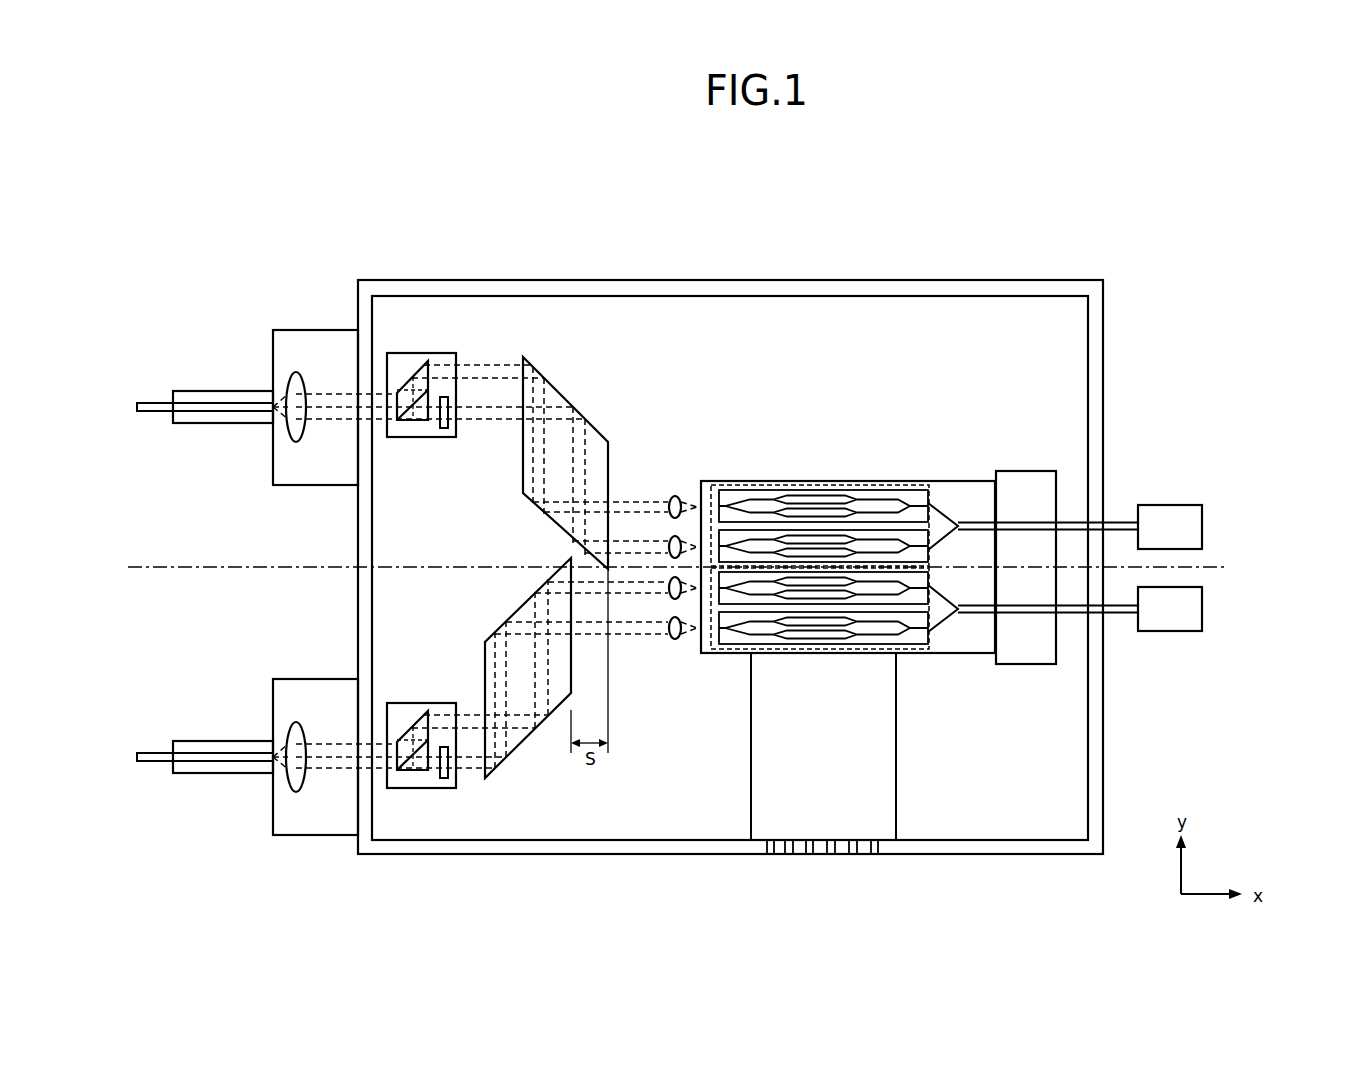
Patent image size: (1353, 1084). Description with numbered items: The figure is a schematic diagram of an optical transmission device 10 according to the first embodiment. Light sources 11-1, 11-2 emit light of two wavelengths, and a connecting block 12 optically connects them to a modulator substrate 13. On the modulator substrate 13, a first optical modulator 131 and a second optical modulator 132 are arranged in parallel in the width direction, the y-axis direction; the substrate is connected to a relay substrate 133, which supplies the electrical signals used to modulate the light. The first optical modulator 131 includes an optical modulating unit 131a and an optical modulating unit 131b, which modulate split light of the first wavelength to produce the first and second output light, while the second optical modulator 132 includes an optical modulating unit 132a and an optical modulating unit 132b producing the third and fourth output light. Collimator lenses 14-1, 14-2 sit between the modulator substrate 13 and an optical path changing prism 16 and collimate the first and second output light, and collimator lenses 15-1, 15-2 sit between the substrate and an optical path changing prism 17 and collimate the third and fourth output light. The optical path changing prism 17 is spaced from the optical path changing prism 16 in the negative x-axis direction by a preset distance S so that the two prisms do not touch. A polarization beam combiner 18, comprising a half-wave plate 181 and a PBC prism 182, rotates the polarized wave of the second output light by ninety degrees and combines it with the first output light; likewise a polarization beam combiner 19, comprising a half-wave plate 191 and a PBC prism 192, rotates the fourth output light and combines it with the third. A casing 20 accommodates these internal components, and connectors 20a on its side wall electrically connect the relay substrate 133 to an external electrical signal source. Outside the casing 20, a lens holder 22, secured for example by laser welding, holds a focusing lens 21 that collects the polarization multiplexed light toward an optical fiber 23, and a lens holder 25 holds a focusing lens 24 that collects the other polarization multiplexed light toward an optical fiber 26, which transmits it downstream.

The optical transmission device 10 is at (754, 216).
The casing 20 is at (915, 280).
The connectors 20a is at (873, 855).
The lens holder 22 is at (322, 310).
The optical fiber 23 is at (185, 373).
The focusing lens 21 is at (286, 384).
The polarization beam combiner 18 is at (443, 337).
The PBC prism 182 is at (412, 421).
The half-wave plate 181 is at (445, 428).
The optical path changing prism 16 is at (556, 390).
The collimator lens 14-1 is at (671, 497).
The collimator lens 14-2 is at (671, 538).
The lens holder 25 is at (319, 835).
The optical fiber 26 is at (183, 773).
The focusing lens 24 is at (286, 782).
The polarization beam combiner 19 is at (443, 687).
The PBC prism 192 is at (412, 771).
The half-wave plate 191 is at (445, 778).
The optical path changing prism 17 is at (518, 609).
The collimator lens 15-1 is at (670, 597).
The collimator lens 15-2 is at (670, 638).
The modulator substrate 13 is at (916, 465).
The first optical modulator 131 is at (823, 482).
The second optical modulator 132 is at (908, 651).
The optical modulating unit 131a is at (933, 502).
The optical modulating unit 131b is at (933, 556).
The optical modulating unit 132a is at (933, 579).
The optical modulating unit 132b is at (933, 639).
The relay substrate 133 is at (897, 750).
The connecting block 12 is at (1034, 452).
The light source 11-1 is at (1203, 526).
The light source 11-2 is at (1203, 611).